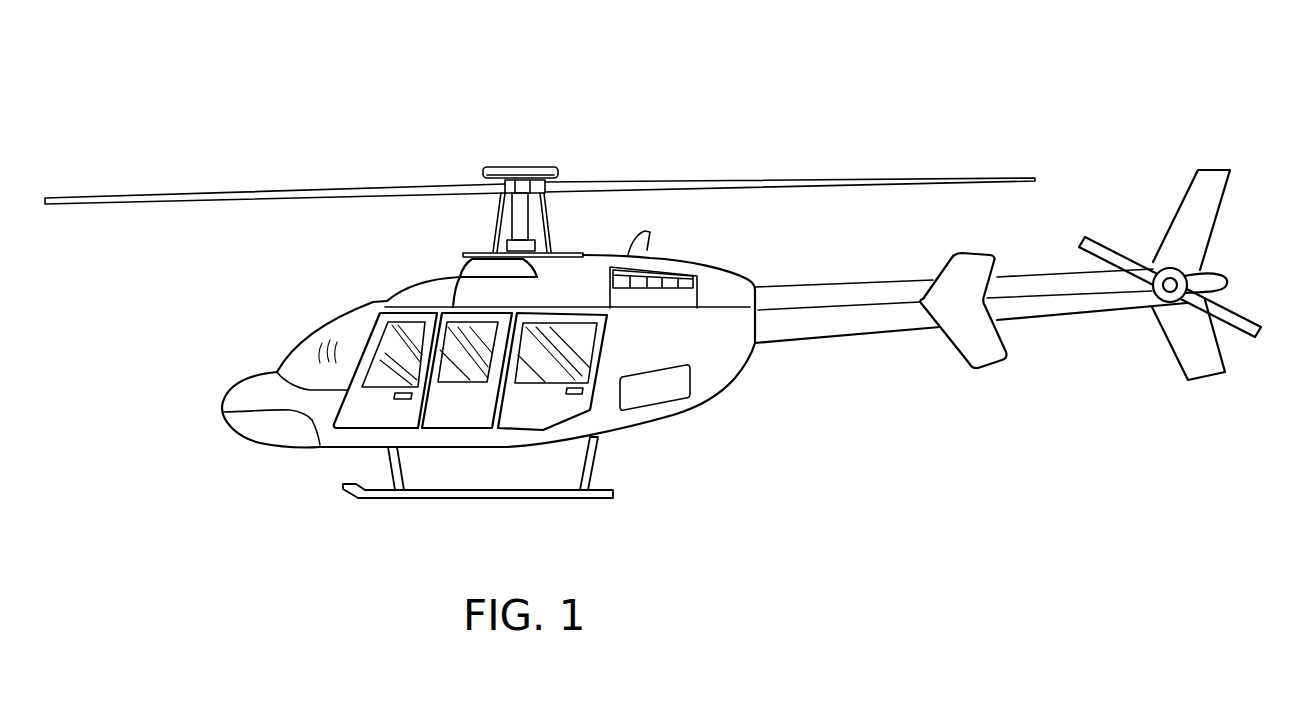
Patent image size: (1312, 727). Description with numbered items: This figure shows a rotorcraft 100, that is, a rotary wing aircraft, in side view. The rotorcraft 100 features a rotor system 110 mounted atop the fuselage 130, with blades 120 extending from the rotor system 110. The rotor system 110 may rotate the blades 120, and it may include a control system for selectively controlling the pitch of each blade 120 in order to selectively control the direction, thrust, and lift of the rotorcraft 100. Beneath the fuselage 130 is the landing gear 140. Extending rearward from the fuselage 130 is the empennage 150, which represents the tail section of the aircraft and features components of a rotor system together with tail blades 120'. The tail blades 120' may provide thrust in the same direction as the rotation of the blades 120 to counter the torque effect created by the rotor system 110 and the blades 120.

The rotorcraft 100 is at (383, 93).
The rotor system 110 is at (520, 167).
The blades 120 is at (540, 162).
The tail blades 120' is at (1187, 287).
The fuselage 130 is at (272, 447).
The landing gear 140 is at (488, 500).
The empennage 150 is at (857, 339).